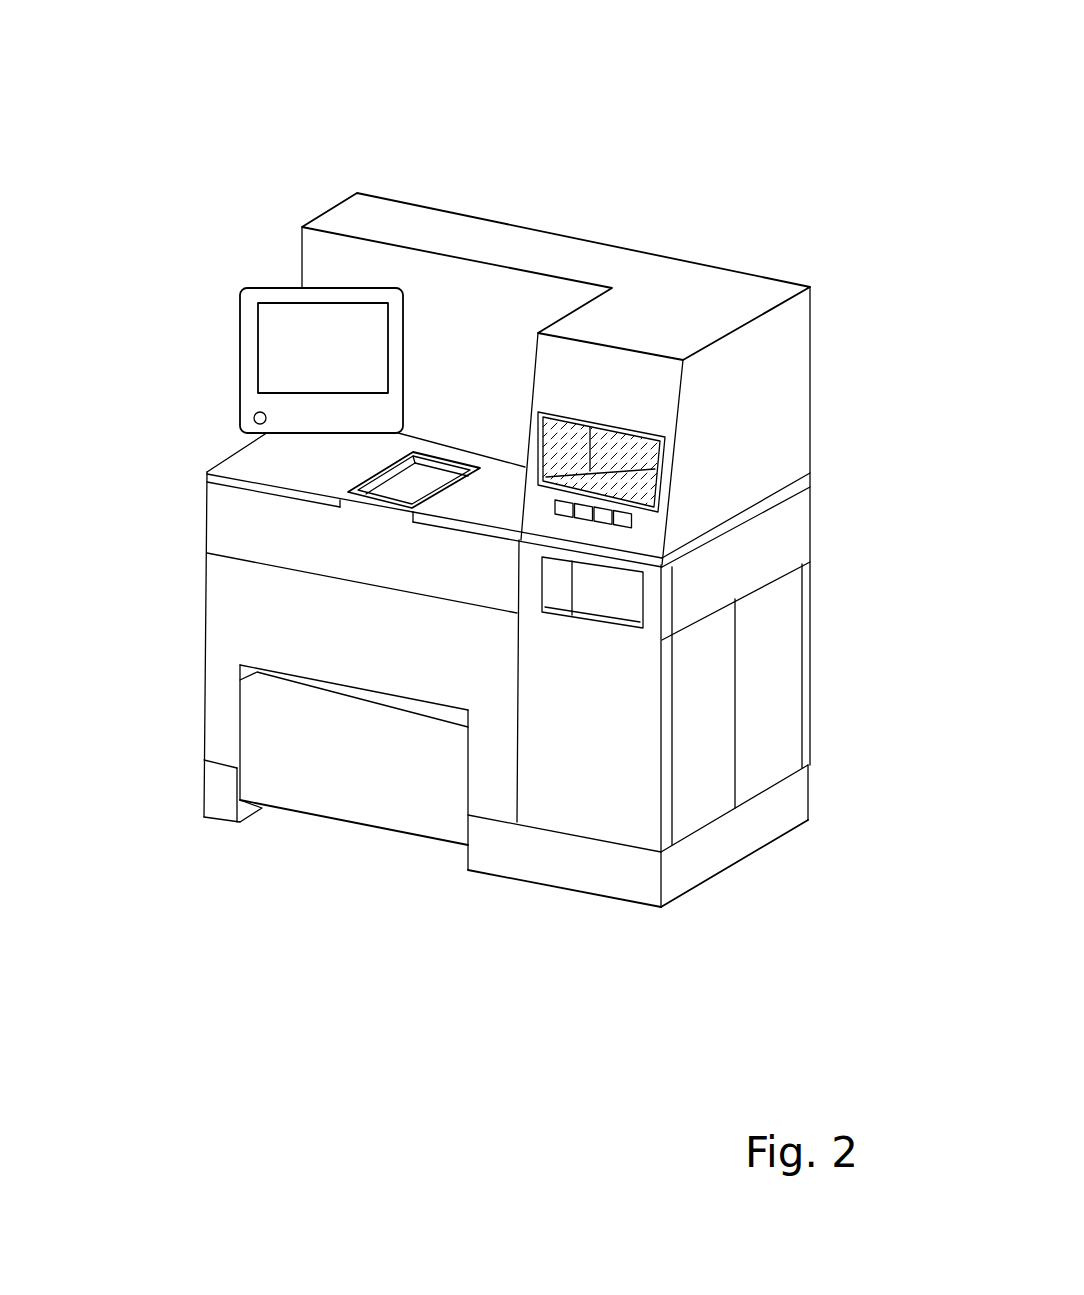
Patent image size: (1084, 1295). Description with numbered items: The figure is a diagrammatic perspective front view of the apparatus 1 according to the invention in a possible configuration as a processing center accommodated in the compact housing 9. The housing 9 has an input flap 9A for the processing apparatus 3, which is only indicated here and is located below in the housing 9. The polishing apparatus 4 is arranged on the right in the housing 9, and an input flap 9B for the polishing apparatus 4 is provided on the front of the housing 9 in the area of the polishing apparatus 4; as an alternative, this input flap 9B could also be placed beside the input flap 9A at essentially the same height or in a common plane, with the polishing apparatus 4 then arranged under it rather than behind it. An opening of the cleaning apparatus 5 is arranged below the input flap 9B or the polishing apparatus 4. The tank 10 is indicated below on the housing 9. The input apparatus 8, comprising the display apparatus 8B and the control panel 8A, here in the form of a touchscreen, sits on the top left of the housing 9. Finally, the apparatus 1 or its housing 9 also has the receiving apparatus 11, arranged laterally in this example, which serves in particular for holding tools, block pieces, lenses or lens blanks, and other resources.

The apparatus 1 is at (497, 548).
The processing apparatus 3 is at (227, 518).
The polishing apparatus 4 is at (793, 352).
The cleaning apparatus 5 is at (599, 611).
The input apparatus 8 is at (246, 278).
The control panel 8A is at (239, 327).
The display apparatus 8B is at (275, 345).
The housing 9 is at (687, 704).
The input flap 9A is at (438, 448).
The input flap 9B is at (643, 454).
The tank 10 is at (325, 768).
The receiving apparatus 11 is at (768, 762).